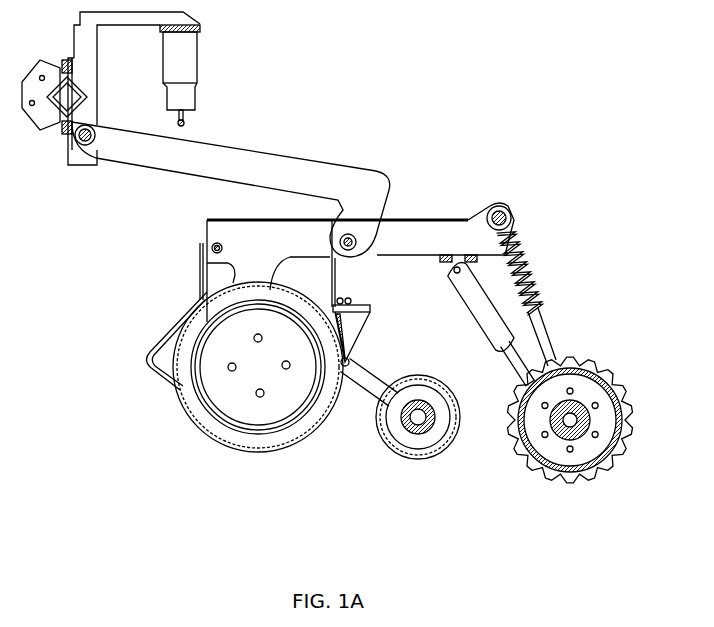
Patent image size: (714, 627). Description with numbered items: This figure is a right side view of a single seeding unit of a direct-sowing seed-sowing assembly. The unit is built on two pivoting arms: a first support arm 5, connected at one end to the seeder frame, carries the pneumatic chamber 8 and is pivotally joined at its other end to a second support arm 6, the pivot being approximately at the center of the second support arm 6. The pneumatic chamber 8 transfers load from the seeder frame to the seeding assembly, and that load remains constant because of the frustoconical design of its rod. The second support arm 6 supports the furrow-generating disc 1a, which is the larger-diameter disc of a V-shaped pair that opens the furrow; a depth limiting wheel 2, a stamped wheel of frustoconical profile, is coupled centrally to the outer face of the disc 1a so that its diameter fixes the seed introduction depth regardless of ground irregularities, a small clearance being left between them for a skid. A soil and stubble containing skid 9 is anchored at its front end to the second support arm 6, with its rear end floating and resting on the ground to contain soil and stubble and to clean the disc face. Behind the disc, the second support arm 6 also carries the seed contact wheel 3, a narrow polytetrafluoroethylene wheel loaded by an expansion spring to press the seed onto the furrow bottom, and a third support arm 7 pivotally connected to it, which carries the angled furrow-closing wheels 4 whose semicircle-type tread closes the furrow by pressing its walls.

The furrow-generating disc 1a is at (200, 417).
The depth limiting wheel 2 is at (245, 405).
The seed contact wheel 3 is at (388, 435).
The furrow-closing wheels 4 is at (545, 435).
The first support arm 5 is at (143, 152).
The second support arm 6 is at (427, 228).
The third support arm 7 is at (477, 295).
The pneumatic chamber 8 is at (185, 63).
The containing skid 9 is at (173, 385).